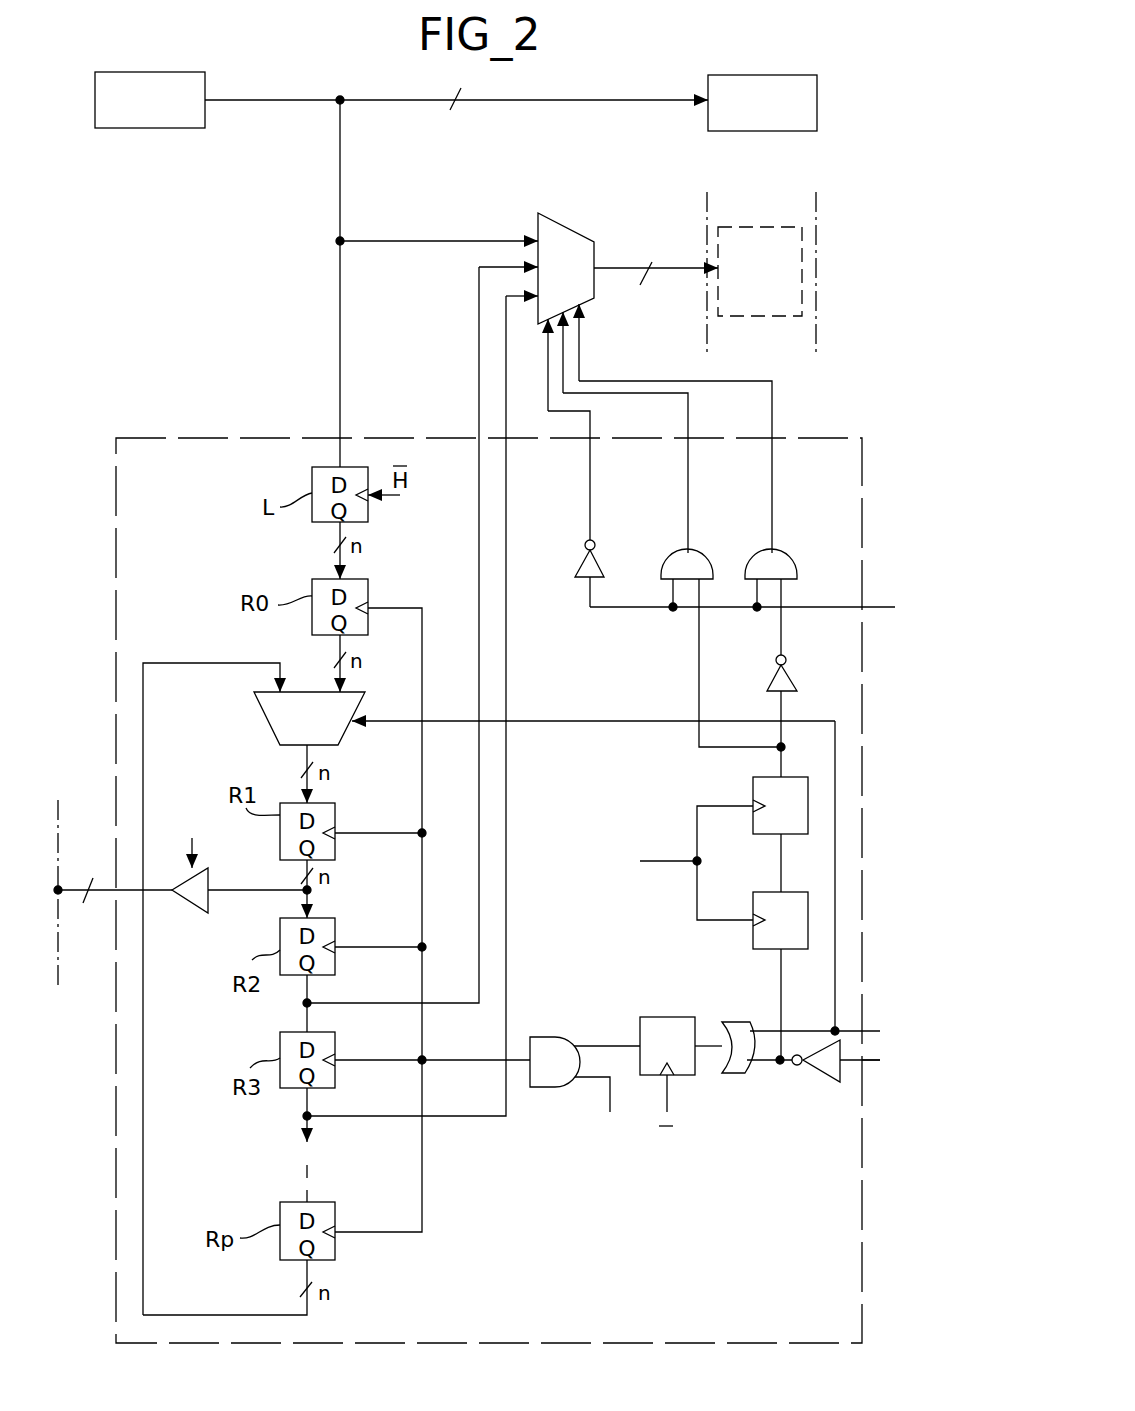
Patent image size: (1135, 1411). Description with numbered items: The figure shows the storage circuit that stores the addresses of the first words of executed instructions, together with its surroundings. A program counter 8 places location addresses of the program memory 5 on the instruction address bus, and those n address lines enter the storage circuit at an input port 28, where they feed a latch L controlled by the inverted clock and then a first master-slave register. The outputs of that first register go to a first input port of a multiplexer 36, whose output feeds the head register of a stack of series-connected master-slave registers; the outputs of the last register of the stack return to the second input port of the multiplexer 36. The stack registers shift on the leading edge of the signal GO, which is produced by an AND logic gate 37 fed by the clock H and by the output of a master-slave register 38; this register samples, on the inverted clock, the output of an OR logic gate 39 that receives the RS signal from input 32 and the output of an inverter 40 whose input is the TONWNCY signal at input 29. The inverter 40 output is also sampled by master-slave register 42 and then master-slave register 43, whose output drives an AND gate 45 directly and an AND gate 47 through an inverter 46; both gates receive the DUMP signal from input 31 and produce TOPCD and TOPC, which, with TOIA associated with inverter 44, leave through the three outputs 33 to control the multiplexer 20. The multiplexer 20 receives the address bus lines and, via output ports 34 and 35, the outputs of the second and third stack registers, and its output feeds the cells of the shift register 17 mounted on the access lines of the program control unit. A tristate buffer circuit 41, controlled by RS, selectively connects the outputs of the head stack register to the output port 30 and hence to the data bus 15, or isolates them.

The program memory 5 is at (755, 75).
The program counter 8 is at (145, 72).
The data bus 15 is at (58, 860).
The shift register 17 is at (816, 240).
The multiplexer 20 is at (562, 222).
The input port 28 is at (338, 437).
The input 29 is at (862, 1062).
The output port 30 is at (115, 893).
The input 31 is at (862, 607).
The input 32 is at (862, 1031).
The outputs 33 is at (768, 418).
The output port 34 is at (479, 438).
The output port 35 is at (507, 443).
The multiplexer 36 is at (265, 716).
The AND logic gate 37 is at (552, 1087).
The master-slave register 38 is at (660, 1017).
The OR logic gate 39 is at (738, 1073).
The inverter 40 is at (828, 1082).
The tristate buffer circuit 41 is at (190, 912).
The master-slave register 42 is at (755, 950).
The master-slave register 43 is at (753, 783).
The inverter 44 is at (580, 563).
The AND gate 45 is at (706, 562).
The inverter 46 is at (790, 672).
The AND gate 47 is at (790, 562).